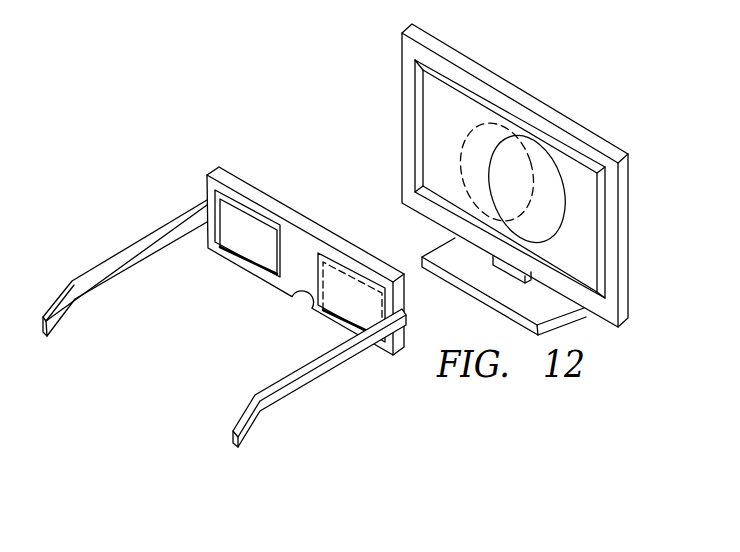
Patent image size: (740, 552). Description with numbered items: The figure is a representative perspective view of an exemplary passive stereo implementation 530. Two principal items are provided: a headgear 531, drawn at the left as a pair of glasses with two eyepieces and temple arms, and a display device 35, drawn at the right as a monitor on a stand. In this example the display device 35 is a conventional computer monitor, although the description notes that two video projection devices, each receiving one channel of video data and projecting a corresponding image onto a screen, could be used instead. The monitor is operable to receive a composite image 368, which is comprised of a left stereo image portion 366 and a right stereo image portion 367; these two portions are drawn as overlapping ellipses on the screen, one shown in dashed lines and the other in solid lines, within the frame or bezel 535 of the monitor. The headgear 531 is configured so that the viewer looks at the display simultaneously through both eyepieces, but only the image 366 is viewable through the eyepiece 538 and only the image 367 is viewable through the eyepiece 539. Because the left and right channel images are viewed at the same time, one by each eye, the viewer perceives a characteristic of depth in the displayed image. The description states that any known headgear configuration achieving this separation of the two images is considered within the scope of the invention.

The passive stereo implementation 530 is at (243, 65).
The headgear 531 is at (189, 174).
The eyepiece 538 is at (341, 304).
The eyepiece 539 is at (248, 251).
The display device 35 is at (538, 78).
The display housing 535 is at (490, 78).
The composite image 368 is at (572, 176).
The left stereo image portion 366 is at (463, 180).
The right stereo image portion 367 is at (527, 233).